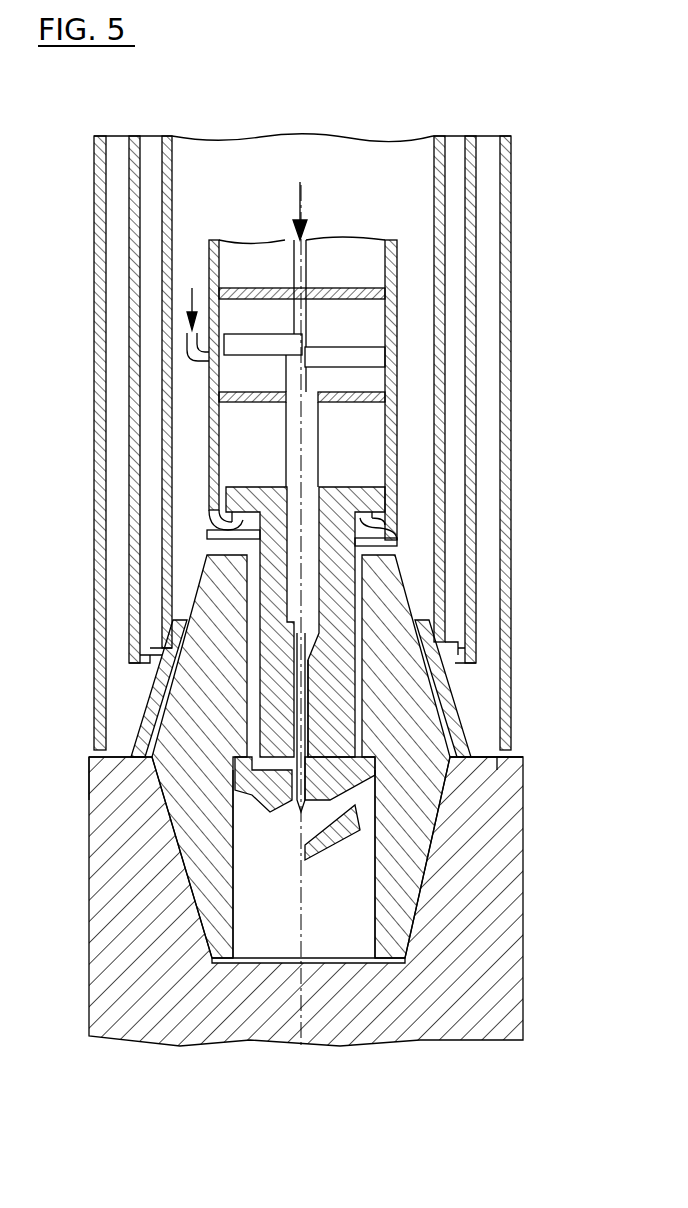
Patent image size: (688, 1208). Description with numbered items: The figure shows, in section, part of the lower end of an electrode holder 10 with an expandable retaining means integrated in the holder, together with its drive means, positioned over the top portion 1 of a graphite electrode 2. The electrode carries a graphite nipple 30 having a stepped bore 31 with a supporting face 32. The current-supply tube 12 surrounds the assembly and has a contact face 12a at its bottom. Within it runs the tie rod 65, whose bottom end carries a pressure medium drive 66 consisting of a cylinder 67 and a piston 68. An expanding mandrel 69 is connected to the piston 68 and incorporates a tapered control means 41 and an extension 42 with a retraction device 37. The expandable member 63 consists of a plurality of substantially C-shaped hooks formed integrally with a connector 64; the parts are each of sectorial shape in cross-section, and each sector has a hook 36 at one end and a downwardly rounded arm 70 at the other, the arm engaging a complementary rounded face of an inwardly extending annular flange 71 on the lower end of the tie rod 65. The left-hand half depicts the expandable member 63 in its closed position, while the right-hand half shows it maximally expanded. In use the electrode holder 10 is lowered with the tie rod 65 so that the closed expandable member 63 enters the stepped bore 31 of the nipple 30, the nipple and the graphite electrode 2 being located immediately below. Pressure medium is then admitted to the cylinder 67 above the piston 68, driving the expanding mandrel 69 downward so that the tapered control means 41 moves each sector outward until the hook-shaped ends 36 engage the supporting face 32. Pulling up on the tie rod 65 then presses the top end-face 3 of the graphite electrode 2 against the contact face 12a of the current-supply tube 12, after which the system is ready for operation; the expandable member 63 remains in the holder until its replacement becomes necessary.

The top portion 1 is at (512, 940).
The graphite electrode 2 is at (548, 886).
The end-face 3 is at (92, 748).
The electrode holder 10 is at (528, 567).
The current-supply tube 12 is at (511, 415).
The contact face 12a is at (500, 770).
The nipple 30 is at (200, 690).
The stepped bore 31 is at (246, 865).
The supporting face 32 is at (272, 782).
The hook 36 is at (236, 775).
The retraction device 37 is at (338, 835).
The tapered control means 41 is at (314, 657).
The extension 42 is at (312, 722).
The expandable member 63 is at (333, 640).
The connector 64 is at (380, 500).
The tie rod 65 is at (397, 262).
The pressure medium drive 66 is at (412, 338).
The cylinder 67 is at (397, 314).
The piston 68 is at (382, 358).
The expanding mandrel 69 is at (312, 450).
The downwardly rounded arm 70 is at (215, 523).
The annular flange 71 is at (215, 540).